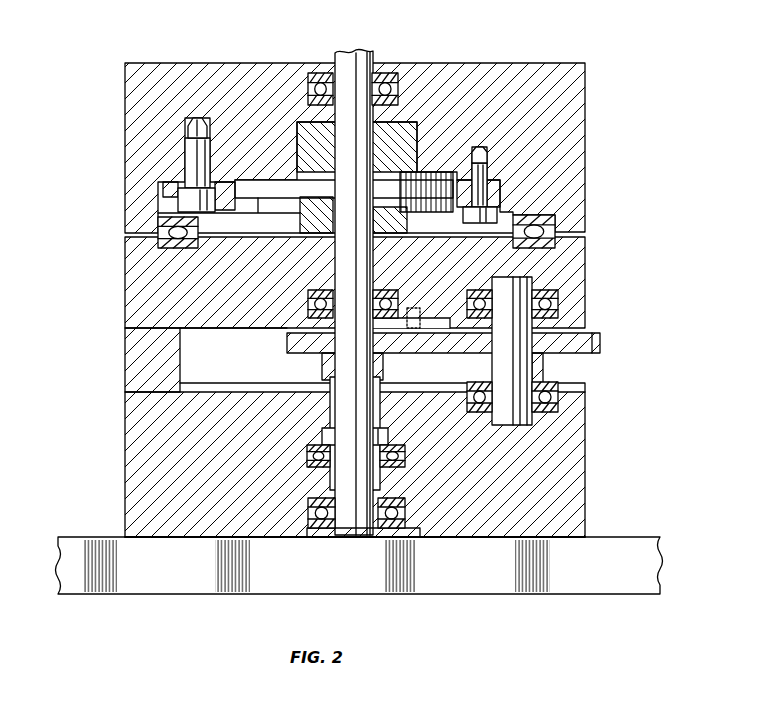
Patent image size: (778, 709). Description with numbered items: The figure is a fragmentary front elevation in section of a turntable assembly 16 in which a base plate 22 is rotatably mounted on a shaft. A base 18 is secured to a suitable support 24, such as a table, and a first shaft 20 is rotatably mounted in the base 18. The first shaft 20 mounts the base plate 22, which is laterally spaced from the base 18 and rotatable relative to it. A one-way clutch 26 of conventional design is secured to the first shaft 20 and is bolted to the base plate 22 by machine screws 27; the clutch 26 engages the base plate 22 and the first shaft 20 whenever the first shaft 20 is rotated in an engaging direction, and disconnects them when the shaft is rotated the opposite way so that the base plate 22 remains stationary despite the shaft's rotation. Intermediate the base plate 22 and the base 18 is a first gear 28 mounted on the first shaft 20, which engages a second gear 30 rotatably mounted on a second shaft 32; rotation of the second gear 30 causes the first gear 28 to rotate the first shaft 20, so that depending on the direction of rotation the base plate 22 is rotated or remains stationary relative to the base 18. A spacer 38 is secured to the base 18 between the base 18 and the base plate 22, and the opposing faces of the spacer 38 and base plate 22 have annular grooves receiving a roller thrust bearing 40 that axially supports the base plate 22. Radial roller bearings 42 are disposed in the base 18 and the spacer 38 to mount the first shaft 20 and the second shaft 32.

The turntable assembly 16 is at (642, 291).
The base 18 is at (584, 462).
The first shaft 20 is at (340, 253).
The base plate 22 is at (585, 115).
The support 24 is at (601, 580).
The one-way clutch 26 is at (250, 180).
The machine screws 27 is at (193, 152).
The first gear 28 is at (287, 345).
The second gear 30 is at (600, 353).
The second shaft 32 is at (584, 256).
The spacer 38 is at (584, 272).
The roller thrust bearing 40 is at (560, 218).
The radial roller bearings 42 is at (398, 88).